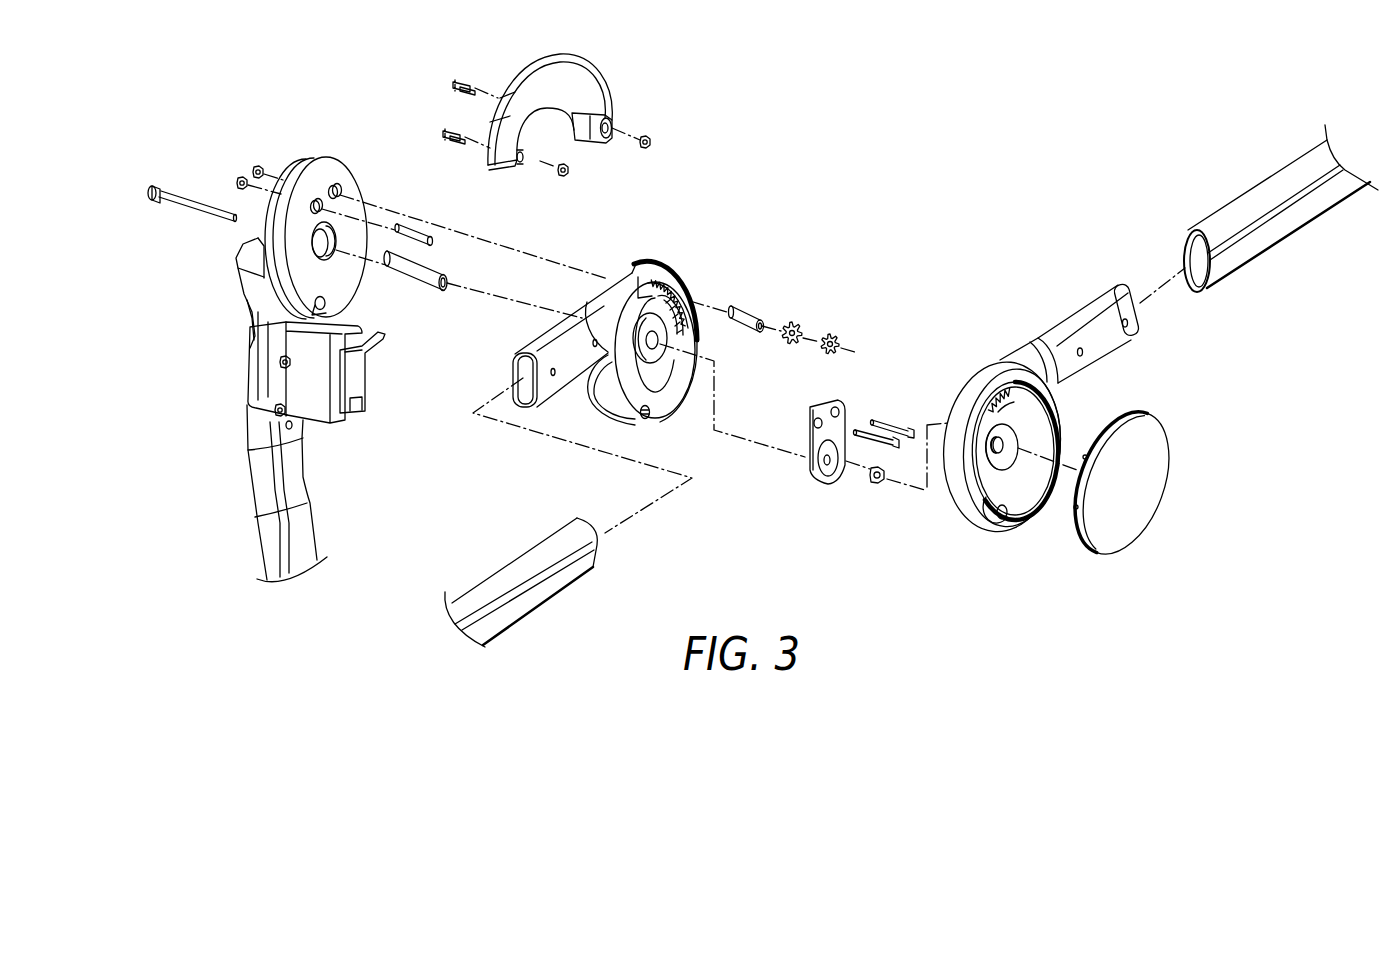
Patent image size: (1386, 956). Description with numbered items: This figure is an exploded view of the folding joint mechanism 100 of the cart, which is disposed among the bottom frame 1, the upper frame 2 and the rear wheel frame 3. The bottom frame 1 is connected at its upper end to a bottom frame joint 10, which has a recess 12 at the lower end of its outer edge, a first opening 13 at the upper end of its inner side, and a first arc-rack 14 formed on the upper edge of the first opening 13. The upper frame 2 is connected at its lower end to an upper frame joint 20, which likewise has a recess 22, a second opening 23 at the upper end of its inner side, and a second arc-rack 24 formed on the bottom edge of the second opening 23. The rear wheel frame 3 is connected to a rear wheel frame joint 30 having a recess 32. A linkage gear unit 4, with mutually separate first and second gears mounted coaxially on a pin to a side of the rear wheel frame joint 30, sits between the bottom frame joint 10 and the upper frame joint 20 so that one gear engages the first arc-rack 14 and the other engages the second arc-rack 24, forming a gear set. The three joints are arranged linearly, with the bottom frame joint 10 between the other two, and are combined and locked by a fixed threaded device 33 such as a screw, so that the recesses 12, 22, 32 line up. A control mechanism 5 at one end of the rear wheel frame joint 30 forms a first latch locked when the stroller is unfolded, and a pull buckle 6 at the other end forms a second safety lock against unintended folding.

The bottom frame 1 is at (533, 590).
The upper frame 2 is at (1256, 205).
The rear wheel frame 3 is at (258, 483).
The linkage gear unit 4 is at (791, 312).
The control mechanism 5 is at (307, 393).
The pull buckle 6 is at (362, 370).
The bottom frame joint 10 is at (673, 380).
The recess 12 is at (646, 420).
The first opening 13 is at (657, 297).
The first arc-rack 14 is at (685, 283).
The upper frame joint 20 is at (1055, 439).
The recess 22 is at (1005, 519).
The second opening 23 is at (1012, 393).
The second arc-rack 24 is at (1012, 404).
The rear wheel frame joint 30 is at (347, 186).
The recess 32 is at (326, 307).
The fixed threaded device 33 is at (187, 203).
The folding joint mechanism 100 is at (639, 332).